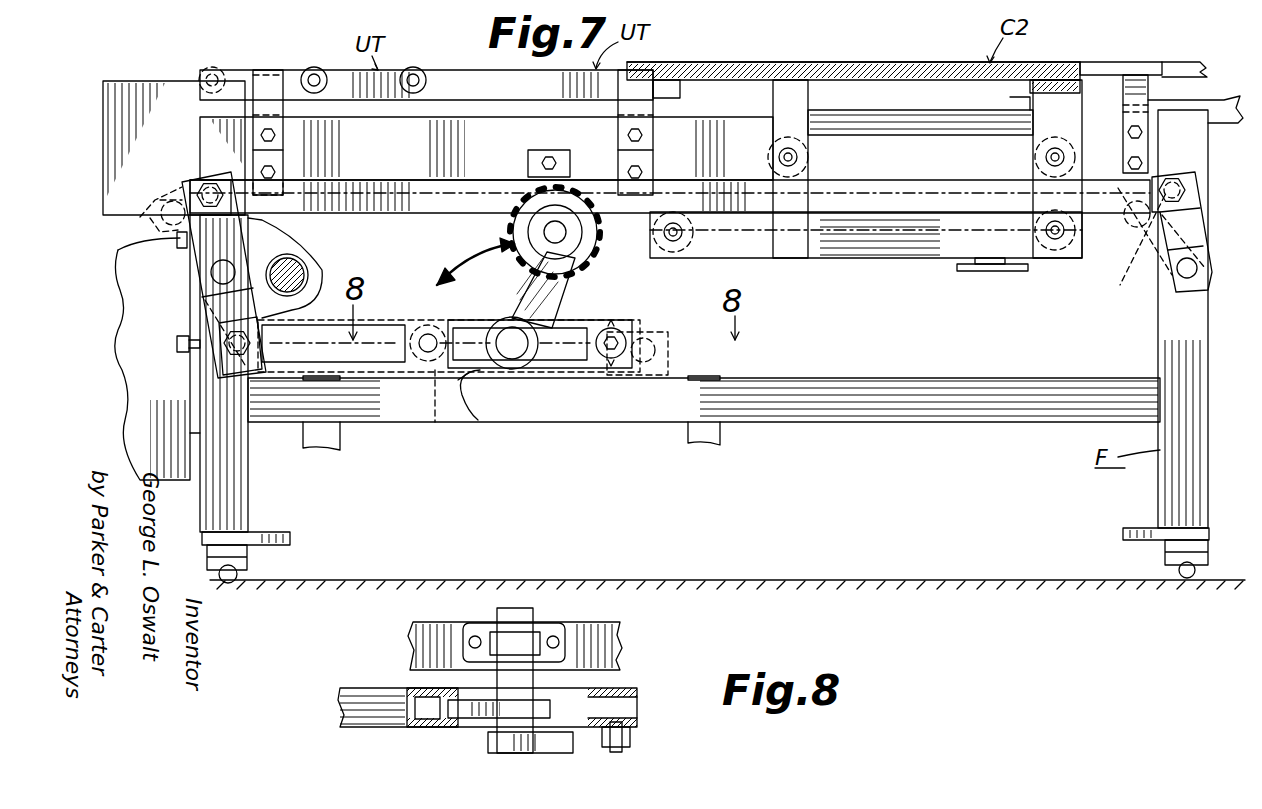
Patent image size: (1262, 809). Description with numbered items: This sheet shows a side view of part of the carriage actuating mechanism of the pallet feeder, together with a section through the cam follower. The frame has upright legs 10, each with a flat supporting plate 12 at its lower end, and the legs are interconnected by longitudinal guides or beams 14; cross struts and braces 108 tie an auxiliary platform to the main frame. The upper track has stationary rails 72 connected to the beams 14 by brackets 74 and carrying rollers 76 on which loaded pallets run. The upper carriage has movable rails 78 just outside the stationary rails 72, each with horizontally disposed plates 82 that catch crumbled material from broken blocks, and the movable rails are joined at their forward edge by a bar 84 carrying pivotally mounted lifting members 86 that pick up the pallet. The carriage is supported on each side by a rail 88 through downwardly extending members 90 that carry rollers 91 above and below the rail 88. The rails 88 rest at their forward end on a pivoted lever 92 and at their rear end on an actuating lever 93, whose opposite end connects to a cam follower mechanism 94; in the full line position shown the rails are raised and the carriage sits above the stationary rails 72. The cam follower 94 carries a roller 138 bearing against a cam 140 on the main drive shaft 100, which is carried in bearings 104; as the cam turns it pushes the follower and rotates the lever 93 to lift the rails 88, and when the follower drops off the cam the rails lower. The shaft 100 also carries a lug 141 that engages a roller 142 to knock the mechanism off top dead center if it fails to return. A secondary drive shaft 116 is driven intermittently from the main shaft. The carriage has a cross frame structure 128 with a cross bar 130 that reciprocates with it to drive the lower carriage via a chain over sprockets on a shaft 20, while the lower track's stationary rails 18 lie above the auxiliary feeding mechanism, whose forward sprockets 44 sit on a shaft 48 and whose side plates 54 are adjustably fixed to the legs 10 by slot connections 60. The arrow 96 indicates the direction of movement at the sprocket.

In FIG. 7, the legs 10 is at (248, 472).
In FIG. 7, the flat supporting plate 12 is at (290, 535).
In FIG. 7, the longitudinal guides or beams 14 is at (398, 155).
In FIG. 7, the stationary rails 18 is at (1228, 108).
In FIG. 7, the shaft 20 is at (220, 275).
In FIG. 7, the forward sprockets 44 is at (598, 262).
In FIG. 7, the shaft 48 is at (597, 240).
In FIG. 7, the side plates 54 is at (135, 365).
In FIG. 7, the slot connections 60 is at (176, 240).
In FIG. 7, the stationary rails 72 is at (445, 65).
In FIG. 7, the brackets 74 is at (280, 124).
In FIG. 7, the rollers 76 is at (216, 68).
In FIG. 7, the movable rails 78 is at (845, 62).
In FIG. 7, the plate 82 is at (880, 70).
In FIG. 7, the bar 84 is at (1070, 92).
In FIG. 7, the lifting members 86 is at (1195, 62).
In FIG. 7, the rail 88 is at (480, 180).
In FIG. 7, the downwardly extending members 90 is at (773, 98).
In FIG. 7, the rollers 91 is at (808, 158).
In FIG. 7, the pivoted lever 92 is at (1190, 222).
In FIG. 7, the actuating lever 93 is at (162, 228).
In FIG. 7, the cam follower mechanism 94 is at (370, 325).
In FIG. 8, the cam follower mechanism 94 is at (355, 697).
In FIG. 7, the rotation arrow 96 is at (510, 238).
In FIG. 7, the main drive shaft 100 is at (512, 355).
In FIG. 8, the bearings 104 is at (528, 630).
In FIG. 7, the cross struts and braces 108 is at (325, 450).
In FIG. 7, the secondary drive shaft 116 is at (300, 268).
In FIG. 7, the cross frame structure 128 is at (900, 258).
In FIG. 7, the cross bar 130 is at (990, 272).
In FIG. 7, the roller 138 is at (468, 328).
In FIG. 8, the roller 138 is at (420, 710).
In FIG. 7, the cam 140 is at (478, 420).
In FIG. 8, the cam 140 is at (475, 712).
In FIG. 7, the lug 141 is at (560, 292).
In FIG. 8, the lug 141 is at (565, 752).
In FIG. 7, the roller 142 is at (618, 328).
In FIG. 8, the roller 142 is at (632, 735).